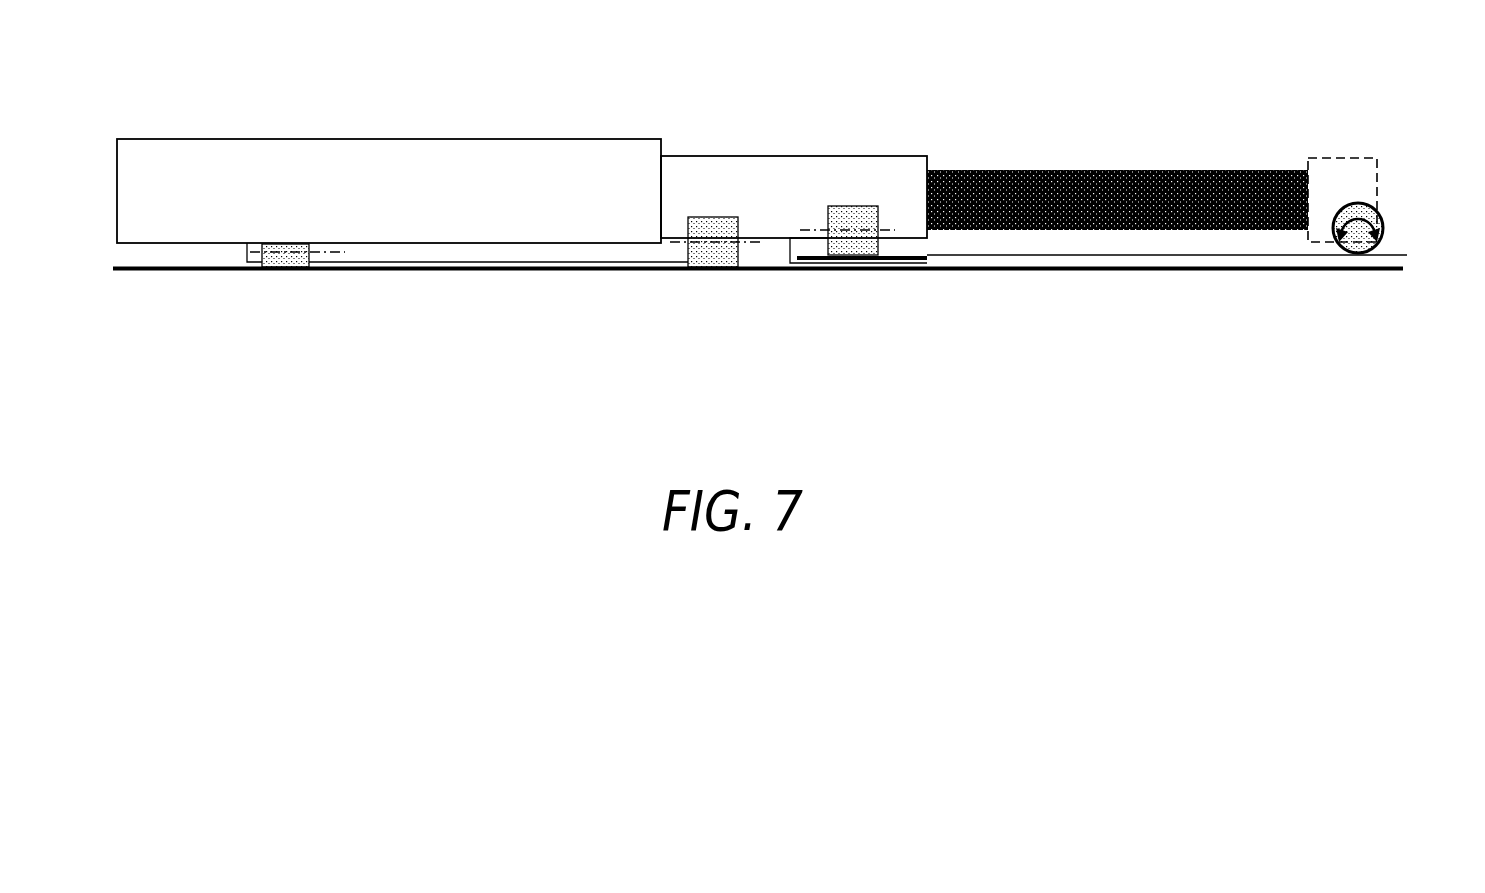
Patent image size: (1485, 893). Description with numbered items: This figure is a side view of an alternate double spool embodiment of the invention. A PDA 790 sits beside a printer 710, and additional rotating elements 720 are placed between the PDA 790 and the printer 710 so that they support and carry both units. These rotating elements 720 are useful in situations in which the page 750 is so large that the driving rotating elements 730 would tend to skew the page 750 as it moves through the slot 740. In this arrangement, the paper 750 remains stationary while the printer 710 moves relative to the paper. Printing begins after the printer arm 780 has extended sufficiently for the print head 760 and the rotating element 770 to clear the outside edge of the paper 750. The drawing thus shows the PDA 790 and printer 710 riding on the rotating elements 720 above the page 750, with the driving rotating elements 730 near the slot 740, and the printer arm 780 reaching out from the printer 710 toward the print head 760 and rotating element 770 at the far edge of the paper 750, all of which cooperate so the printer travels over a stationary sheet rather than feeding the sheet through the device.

The PDA 790 is at (268, 139).
The printer 710 is at (765, 156).
The rotating elements 720 is at (285, 268).
The driving rotating elements 730 is at (858, 258).
The slot 740 is at (915, 244).
The page 750 is at (1163, 256).
The print head 760 is at (1340, 158).
The rotating element 770 is at (1383, 222).
The printer arm 780 is at (1112, 170).